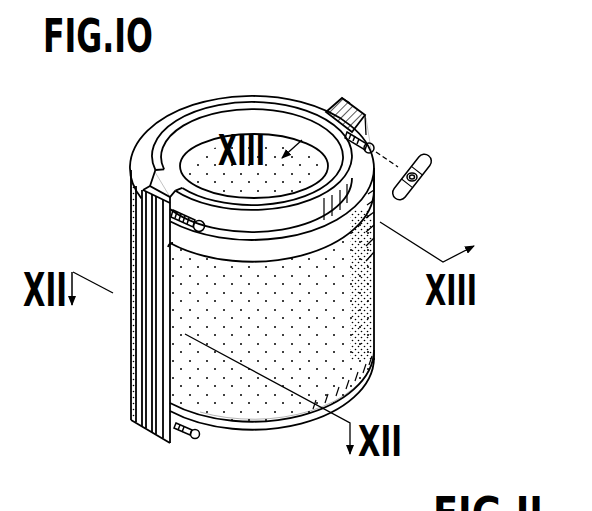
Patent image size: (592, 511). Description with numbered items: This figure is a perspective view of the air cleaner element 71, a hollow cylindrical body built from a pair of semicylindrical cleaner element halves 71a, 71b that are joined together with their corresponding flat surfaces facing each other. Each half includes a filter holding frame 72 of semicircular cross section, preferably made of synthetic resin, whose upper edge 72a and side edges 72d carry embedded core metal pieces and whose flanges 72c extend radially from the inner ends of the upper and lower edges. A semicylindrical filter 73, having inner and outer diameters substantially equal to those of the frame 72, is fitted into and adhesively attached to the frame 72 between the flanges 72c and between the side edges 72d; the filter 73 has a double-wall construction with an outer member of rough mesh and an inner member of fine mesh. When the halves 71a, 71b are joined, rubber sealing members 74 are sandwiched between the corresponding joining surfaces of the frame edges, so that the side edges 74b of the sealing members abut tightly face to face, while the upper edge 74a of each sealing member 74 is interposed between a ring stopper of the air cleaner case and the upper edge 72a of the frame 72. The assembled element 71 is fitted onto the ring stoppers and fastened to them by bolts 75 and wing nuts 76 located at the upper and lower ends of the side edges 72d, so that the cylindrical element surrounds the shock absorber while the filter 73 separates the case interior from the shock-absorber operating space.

The air cleaner element 71 is at (118, 171).
The cleaner element half 71a is at (374, 374).
The cleaner element half 71b is at (126, 208).
The filter holding frame 72 is at (352, 178).
The upper edge 72a is at (247, 223).
The flange 72c is at (382, 211).
The side edge 72d is at (151, 460).
The filter 73 is at (362, 345).
The rubber sealing member 74 is at (244, 100).
The upper edge 74a is at (290, 168).
The side edge 74b is at (145, 365).
The bolt 75 is at (374, 146).
The wing nut 76 is at (432, 164).